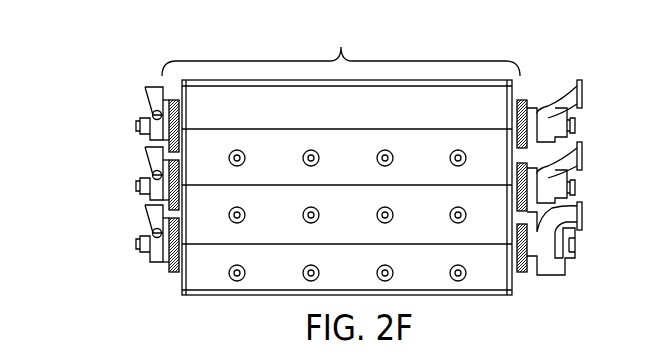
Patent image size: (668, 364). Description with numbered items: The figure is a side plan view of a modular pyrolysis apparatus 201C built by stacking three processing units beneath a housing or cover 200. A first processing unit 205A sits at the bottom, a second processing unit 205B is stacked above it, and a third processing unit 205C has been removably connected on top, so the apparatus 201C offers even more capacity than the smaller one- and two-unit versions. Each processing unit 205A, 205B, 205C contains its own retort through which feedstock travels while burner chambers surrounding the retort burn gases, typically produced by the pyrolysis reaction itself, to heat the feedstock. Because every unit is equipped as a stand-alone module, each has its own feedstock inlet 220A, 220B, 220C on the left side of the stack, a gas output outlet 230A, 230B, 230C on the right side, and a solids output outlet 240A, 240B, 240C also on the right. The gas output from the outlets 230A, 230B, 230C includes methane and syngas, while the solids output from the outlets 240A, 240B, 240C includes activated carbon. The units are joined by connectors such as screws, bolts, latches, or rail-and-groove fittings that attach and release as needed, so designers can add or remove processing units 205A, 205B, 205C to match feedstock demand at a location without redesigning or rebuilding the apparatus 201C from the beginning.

The housing or cover 200 is at (357, 113).
The pyrolysis apparatus 201C is at (341, 47).
The first processing unit 205A is at (360, 275).
The second processing unit 205B is at (360, 223).
The third processing unit 205C is at (360, 166).
The feedstock inlet 220A is at (150, 210).
The feedstock inlet 220B is at (150, 153).
The feedstock inlet 220C is at (150, 92).
The gas output outlet 230A is at (585, 222).
The gas output outlet 230B is at (585, 162).
The gas output outlet 230C is at (585, 96).
The solids output outlet 240A is at (565, 268).
The solids output outlet 240B is at (572, 181).
The solids output outlet 240C is at (572, 119).